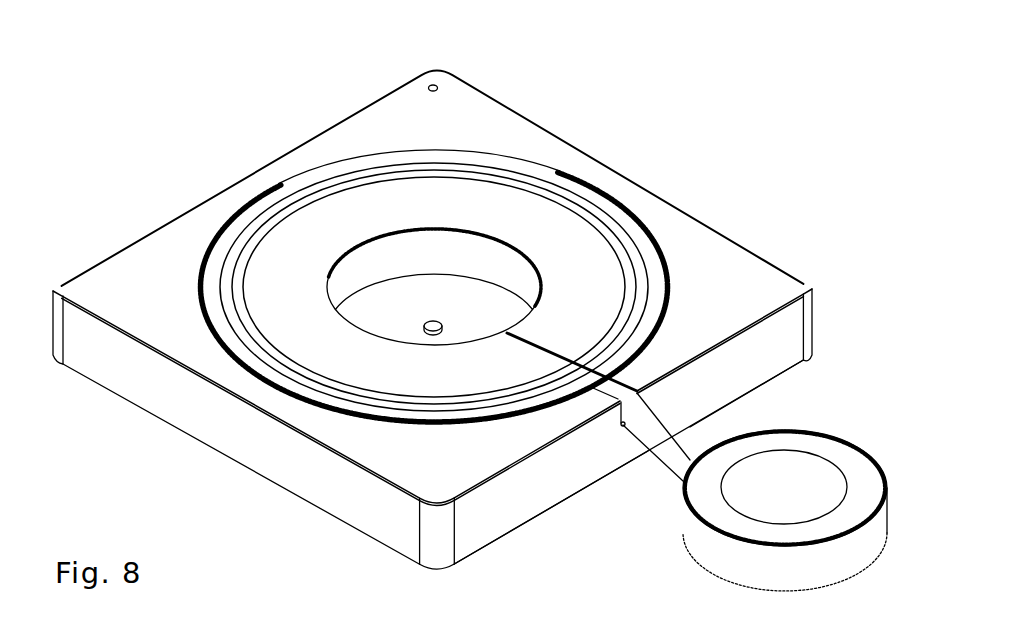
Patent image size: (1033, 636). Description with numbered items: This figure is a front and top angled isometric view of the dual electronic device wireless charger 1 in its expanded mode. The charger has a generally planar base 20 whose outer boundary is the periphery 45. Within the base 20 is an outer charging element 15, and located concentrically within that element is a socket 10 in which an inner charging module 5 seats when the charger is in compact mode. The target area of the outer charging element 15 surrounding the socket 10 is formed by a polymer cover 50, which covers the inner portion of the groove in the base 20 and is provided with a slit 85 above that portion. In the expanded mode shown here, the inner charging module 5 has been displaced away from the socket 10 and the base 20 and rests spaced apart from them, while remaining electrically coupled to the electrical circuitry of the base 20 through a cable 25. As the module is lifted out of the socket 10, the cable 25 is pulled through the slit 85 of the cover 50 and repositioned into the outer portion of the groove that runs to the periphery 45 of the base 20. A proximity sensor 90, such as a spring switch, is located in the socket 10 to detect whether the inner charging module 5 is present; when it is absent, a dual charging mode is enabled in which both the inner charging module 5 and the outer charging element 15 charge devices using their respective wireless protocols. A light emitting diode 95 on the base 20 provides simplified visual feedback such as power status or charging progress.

The dual electronic device wireless charger 1 is at (429, 349).
The base 20 is at (432, 264).
The periphery 45 is at (681, 429).
The light emitting diode 95 is at (358, 55).
The slit 85 is at (554, 241).
The outer charging element 15 is at (520, 236).
The polymer cover 50 is at (532, 279).
The socket 10 is at (355, 182).
The proximity sensor 90 is at (262, 198).
The cable 25 is at (598, 465).
The inner charging module 5 is at (796, 476).